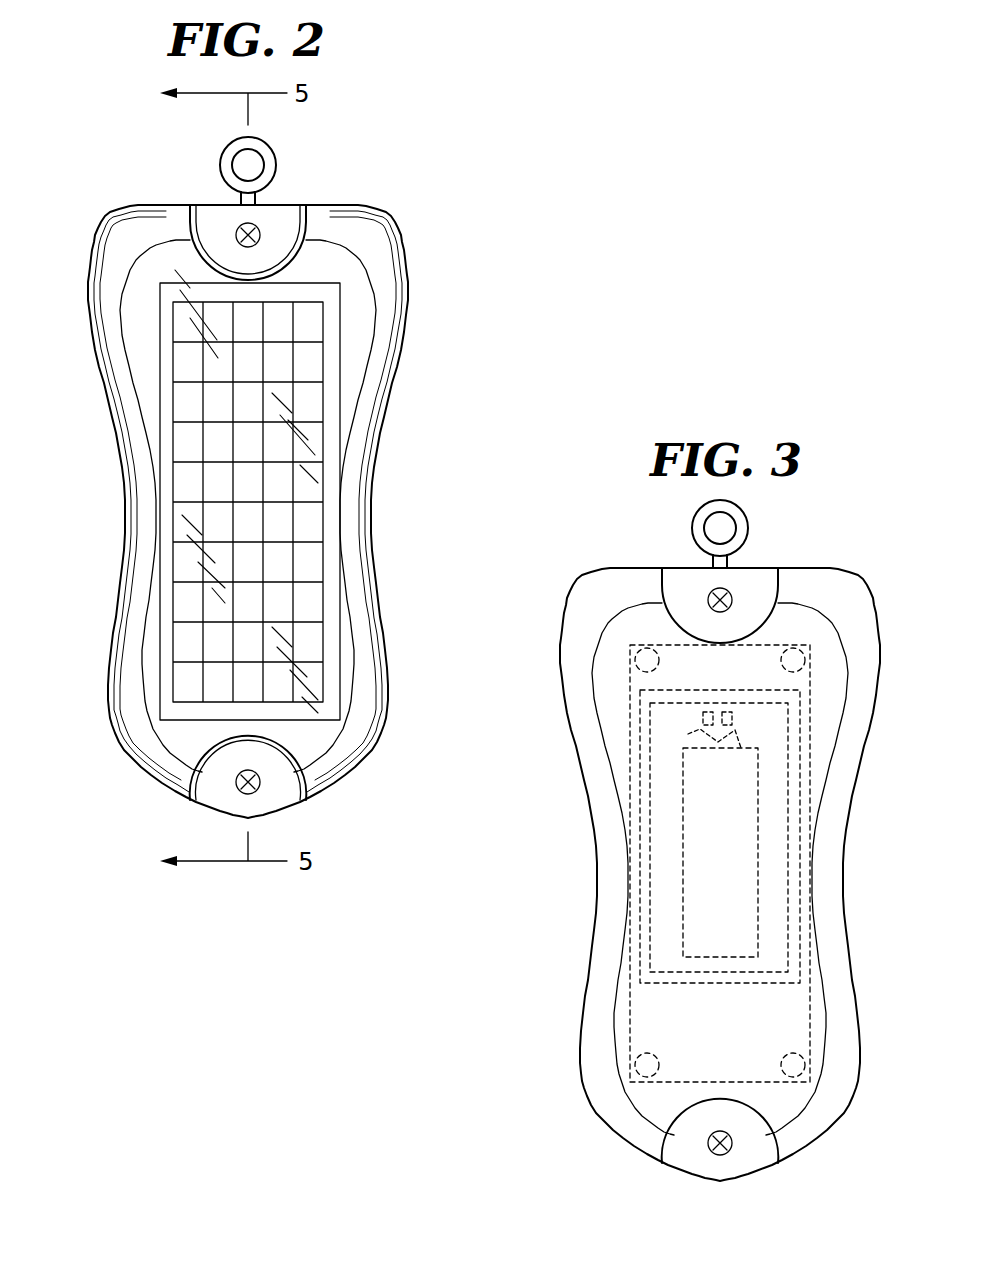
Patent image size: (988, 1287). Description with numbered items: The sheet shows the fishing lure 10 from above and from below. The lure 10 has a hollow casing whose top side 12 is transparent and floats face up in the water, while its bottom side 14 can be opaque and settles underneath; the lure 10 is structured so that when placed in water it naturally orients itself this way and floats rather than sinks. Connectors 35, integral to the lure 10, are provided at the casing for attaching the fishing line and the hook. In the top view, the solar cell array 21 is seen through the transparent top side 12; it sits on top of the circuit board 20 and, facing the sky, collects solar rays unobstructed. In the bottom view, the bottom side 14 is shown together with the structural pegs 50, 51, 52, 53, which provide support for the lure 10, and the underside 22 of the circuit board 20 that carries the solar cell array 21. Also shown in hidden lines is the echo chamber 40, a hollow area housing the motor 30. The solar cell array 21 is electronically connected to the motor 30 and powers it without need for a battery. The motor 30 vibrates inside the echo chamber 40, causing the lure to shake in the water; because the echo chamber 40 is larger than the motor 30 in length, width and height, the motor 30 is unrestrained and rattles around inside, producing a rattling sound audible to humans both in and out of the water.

In FIG. 2, the fishing lure 10 is at (428, 246).
In FIG. 3, the fishing lure 10 is at (558, 572).
In FIG. 2, the top side 12 is at (148, 500).
In FIG. 3, the bottom side 14 is at (847, 602).
In FIG. 2, the circuit board 20 is at (322, 293).
In FIG. 3, the circuit board 20 is at (628, 1012).
In FIG. 2, the solar cell array 21 is at (310, 365).
In FIG. 3, the underside of the circuit board 22 is at (703, 1015).
In FIG. 3, the motor 30 is at (713, 872).
In FIG. 2, the connectors 35 is at (232, 170).
In FIG. 3, the connectors 35 is at (705, 536).
In FIG. 3, the echo chamber 40 is at (642, 790).
In FIG. 3, the structural peg 50 is at (634, 660).
In FIG. 3, the structural peg 51 is at (800, 665).
In FIG. 3, the structural peg 52 is at (805, 1073).
In FIG. 3, the structural peg 53 is at (635, 1068).